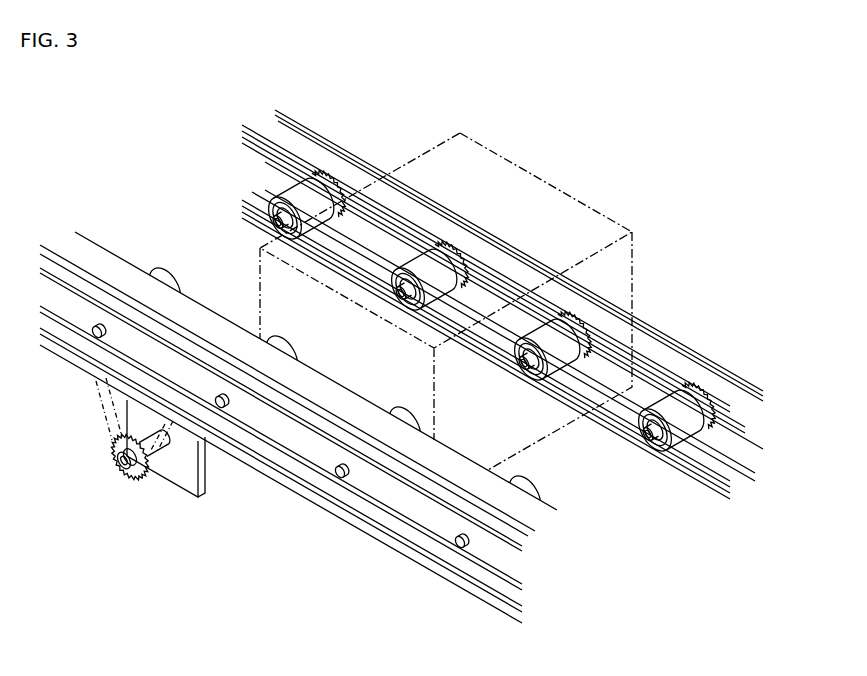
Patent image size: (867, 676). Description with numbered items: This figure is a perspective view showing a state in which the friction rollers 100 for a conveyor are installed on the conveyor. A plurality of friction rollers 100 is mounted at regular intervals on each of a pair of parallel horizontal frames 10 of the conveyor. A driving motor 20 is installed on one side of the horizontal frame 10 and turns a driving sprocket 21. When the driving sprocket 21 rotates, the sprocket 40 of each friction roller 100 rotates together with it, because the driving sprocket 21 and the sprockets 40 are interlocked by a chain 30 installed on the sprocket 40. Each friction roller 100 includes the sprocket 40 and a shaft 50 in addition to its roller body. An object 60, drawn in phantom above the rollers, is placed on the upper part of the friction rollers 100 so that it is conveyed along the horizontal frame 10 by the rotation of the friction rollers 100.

The horizontal frame 10 is at (676, 365).
The driving motor 20 is at (212, 460).
The driving sprocket 21 is at (138, 480).
The chain 30 is at (103, 420).
The sprocket 40 is at (338, 216).
The shaft 50 is at (278, 222).
The object 60 is at (557, 210).
The friction roller 100 is at (325, 176).